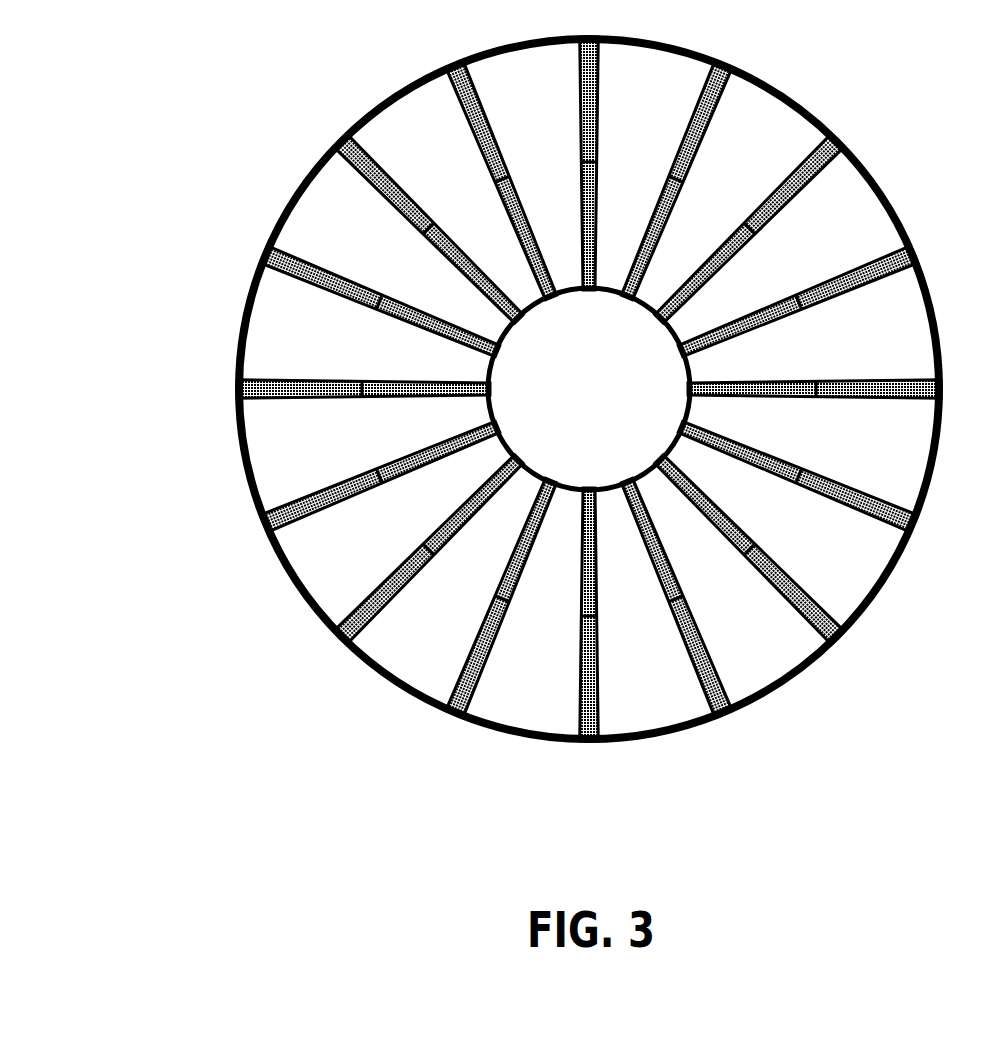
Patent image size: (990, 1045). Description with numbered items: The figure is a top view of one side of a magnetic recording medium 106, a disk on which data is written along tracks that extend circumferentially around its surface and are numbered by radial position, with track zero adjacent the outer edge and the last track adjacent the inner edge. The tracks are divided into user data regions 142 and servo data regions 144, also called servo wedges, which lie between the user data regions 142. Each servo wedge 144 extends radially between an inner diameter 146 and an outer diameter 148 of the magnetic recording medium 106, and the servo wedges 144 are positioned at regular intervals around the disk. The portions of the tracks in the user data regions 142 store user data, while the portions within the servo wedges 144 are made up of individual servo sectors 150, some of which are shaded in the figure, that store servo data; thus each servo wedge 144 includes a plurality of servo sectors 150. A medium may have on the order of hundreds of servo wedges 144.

The magnetic recording medium 106 is at (122, 139).
The user data regions 142 is at (883, 443).
The servo data regions 144 is at (915, 380).
The inner diameter 146 is at (589, 300).
The outer diameter 148 is at (320, 150).
The servo sectors 150 is at (577, 618).